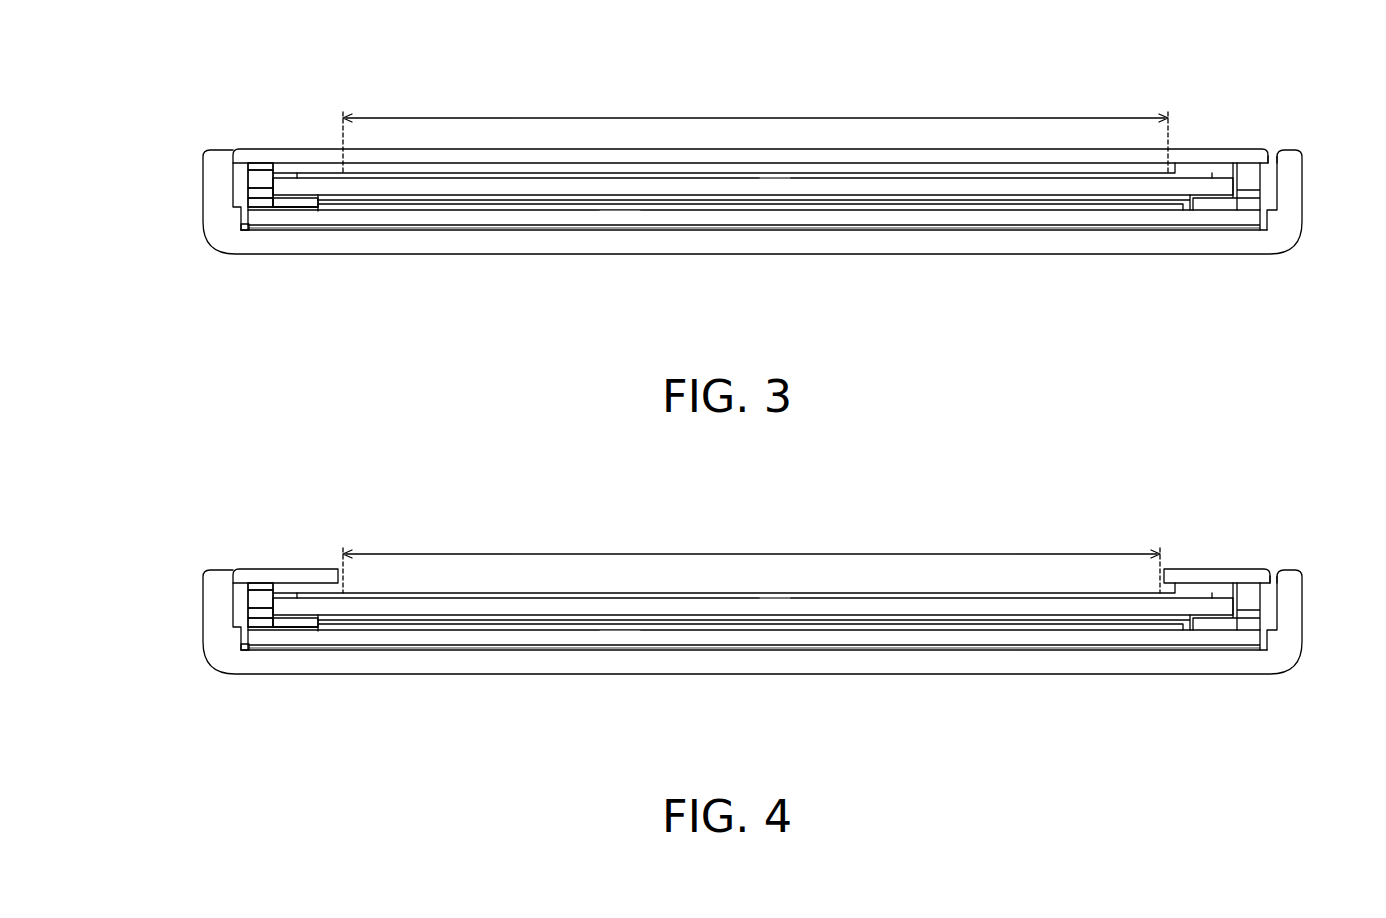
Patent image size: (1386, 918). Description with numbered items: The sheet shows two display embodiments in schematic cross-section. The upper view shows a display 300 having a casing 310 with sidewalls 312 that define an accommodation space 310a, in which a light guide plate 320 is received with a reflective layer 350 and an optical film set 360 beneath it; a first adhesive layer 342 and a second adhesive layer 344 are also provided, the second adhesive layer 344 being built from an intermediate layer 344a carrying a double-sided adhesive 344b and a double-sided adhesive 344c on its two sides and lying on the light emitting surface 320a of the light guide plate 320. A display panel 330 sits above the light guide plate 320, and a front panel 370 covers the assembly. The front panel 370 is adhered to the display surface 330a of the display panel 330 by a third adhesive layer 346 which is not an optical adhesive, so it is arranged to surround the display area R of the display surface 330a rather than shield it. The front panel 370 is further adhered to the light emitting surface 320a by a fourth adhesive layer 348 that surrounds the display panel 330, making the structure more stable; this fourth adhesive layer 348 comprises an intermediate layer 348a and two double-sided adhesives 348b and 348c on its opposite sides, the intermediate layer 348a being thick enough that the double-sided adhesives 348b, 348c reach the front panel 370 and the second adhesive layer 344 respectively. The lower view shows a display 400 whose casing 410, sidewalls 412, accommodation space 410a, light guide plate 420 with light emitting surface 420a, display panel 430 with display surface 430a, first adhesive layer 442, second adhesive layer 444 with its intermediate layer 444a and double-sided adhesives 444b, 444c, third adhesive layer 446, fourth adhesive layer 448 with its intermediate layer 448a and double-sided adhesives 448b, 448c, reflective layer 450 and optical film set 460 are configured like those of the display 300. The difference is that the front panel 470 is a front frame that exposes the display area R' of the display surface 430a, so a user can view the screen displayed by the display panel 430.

In FIG. 3, the display 300 is at (1310, 329).
In FIG. 3, the casing 310 is at (913, 245).
In FIG. 3, the accommodation space 310a is at (1269, 170).
In FIG. 3, the sidewalls 312 is at (206, 194).
In FIG. 3, the light guide plate 320 is at (700, 222).
In FIG. 3, the light emitting surface 320a is at (600, 210).
In FIG. 3, the display panel 330 is at (823, 185).
In FIG. 3, the display surface 330a is at (757, 172).
In FIG. 3, the first adhesive layer 342 is at (241, 228).
In FIG. 3, the second adhesive layer 344 is at (408, 323).
In FIG. 3, the intermediate layer 344a is at (292, 204).
In FIG. 3, the double-sided adhesive 344b is at (283, 200).
In FIG. 3, the double-sided adhesive 344c is at (307, 211).
In FIG. 3, the third adhesive layer 346 is at (297, 171).
In FIG. 3, the fourth adhesive layer 348 is at (283, 45).
In FIG. 3, the intermediate layer 348a is at (262, 177).
In FIG. 3, the double-sided adhesive 348b is at (265, 165).
In FIG. 3, the double-sided adhesive 348c is at (255, 186).
In FIG. 3, the reflective layer 350 is at (596, 228).
In FIG. 3, the optical film set 360 is at (515, 205).
In FIG. 3, the front panel 370 is at (1197, 160).
In FIG. 3, the display area R is at (755, 114).
In FIG. 4, the display 400 is at (1290, 735).
In FIG. 4, the casing 410 is at (752, 659).
In FIG. 4, the accommodation space 410a is at (1272, 544).
In FIG. 4, the sidewalls 412 is at (755, 613).
In FIG. 4, the light guide plate 420 is at (754, 687).
In FIG. 4, the light emitting surface 420a is at (609, 556).
In FIG. 4, the display panel 430 is at (753, 668).
In FIG. 4, the display surface 430a is at (760, 544).
In FIG. 4, the first adhesive layer 442 is at (190, 648).
In FIG. 4, the second adhesive layer 444 is at (324, 699).
In FIG. 4, the intermediate layer 444a is at (311, 682).
In FIG. 4, the double-sided adhesive 444b is at (268, 682).
In FIG. 4, the double-sided adhesive 444c is at (340, 687).
In FIG. 4, the third adhesive layer 446 is at (723, 549).
In FIG. 4, the fourth adhesive layer 448 is at (200, 537).
In FIG. 4, the intermediate layer 448a is at (225, 537).
In FIG. 4, the double-sided adhesive 448b is at (258, 528).
In FIG. 4, the double-sided adhesive 448c is at (195, 542).
In FIG. 4, the reflective layer 450 is at (754, 698).
In FIG. 4, the optical film set 460 is at (754, 682).
In FIG. 4, the front panel 470 is at (751, 536).
In FIG. 4, the display area R' is at (751, 541).